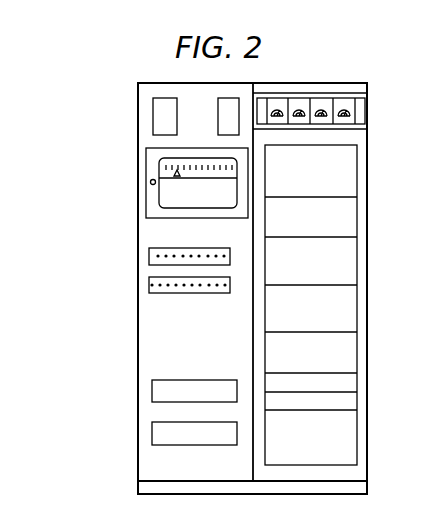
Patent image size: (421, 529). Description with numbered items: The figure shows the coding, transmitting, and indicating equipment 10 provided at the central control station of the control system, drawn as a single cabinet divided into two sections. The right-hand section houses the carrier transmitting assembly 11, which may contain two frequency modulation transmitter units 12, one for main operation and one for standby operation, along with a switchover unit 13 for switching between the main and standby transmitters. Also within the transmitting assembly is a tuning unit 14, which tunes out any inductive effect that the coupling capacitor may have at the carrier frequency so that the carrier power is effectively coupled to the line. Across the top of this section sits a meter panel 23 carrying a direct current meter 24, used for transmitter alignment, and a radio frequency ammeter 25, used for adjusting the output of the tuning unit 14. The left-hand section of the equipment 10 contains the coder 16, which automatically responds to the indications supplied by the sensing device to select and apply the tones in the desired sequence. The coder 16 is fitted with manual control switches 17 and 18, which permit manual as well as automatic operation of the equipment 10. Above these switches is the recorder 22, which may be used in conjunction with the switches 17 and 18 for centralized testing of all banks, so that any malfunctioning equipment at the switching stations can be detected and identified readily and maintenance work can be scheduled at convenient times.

The equipment 10 is at (134, 152).
The carrier transmitting assembly 11 is at (368, 149).
The frequency modulation transmitter units 12 is at (350, 170).
The switchover unit 13 is at (350, 215).
The tuning unit 14 is at (350, 307).
The coder 16 is at (149, 358).
The manual control switch 17 is at (156, 256).
The manual control switch 18 is at (156, 285).
The recorder 22 is at (165, 193).
The meter panel 23 is at (369, 115).
The direct current meter 24 is at (348, 98).
The radio frequency ammeter 25 is at (325, 98).